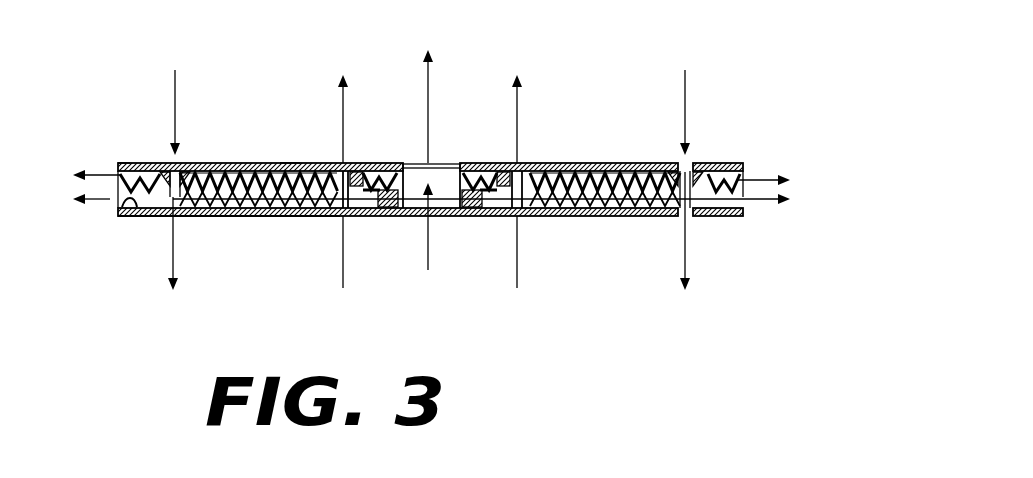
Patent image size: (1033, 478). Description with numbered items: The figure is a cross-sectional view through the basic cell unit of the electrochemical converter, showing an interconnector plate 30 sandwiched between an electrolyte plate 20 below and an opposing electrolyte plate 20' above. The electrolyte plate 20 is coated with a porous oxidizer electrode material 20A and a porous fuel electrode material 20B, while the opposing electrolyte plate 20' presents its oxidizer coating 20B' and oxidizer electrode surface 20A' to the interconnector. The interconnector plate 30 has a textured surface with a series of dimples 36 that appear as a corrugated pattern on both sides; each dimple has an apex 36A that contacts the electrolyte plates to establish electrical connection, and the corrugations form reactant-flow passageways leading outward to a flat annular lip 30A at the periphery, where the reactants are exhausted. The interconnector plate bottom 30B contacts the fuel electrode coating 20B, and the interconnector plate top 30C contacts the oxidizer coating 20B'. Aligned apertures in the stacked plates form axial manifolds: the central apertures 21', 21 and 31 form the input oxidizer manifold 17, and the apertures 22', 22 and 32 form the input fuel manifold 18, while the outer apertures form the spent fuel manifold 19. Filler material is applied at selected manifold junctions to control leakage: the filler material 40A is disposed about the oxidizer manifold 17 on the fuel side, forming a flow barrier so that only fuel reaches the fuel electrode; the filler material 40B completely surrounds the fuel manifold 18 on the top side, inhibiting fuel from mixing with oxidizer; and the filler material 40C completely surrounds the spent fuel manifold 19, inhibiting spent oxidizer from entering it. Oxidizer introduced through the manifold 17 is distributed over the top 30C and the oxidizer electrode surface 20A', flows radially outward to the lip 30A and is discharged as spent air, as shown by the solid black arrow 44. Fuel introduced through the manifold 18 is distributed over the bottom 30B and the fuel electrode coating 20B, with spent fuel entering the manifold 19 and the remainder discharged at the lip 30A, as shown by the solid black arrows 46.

The input oxidizer manifold 17 is at (412, 160).
The input fuel manifold 18 is at (343, 160).
The spent fuel manifold 19 is at (183, 168).
The electrolyte plate 20 is at (430, 246).
The opposing electrolyte plate 20' is at (726, 151).
The oxidizer electrode material 20A is at (92, 215).
The oxidizer electrode surface 20A' is at (285, 143).
The fuel electrode material 20B is at (139, 229).
The oxidizer coating 20B' is at (118, 135).
The central aperture 21 is at (421, 232).
The central aperture 21' is at (444, 106).
The aperture 22 is at (356, 225).
The aperture 22' is at (333, 160).
The interconnector plate 30 is at (752, 165).
The flat annular lip 30A is at (118, 170).
The interconnector plate bottom 30B is at (245, 216).
The interconnector plate top 30C is at (613, 165).
The central aperture 31 is at (445, 220).
The radially outwardly spaced apertures 32 is at (335, 218).
The dimples 36 is at (225, 214).
The apex 36A is at (232, 165).
The filler material 40A is at (480, 220).
The filler material 40B is at (520, 160).
The filler material 40C is at (173, 160).
The oxidizer flow path arrow 44 is at (770, 170).
The fuel flow path arrows 46 is at (170, 265).